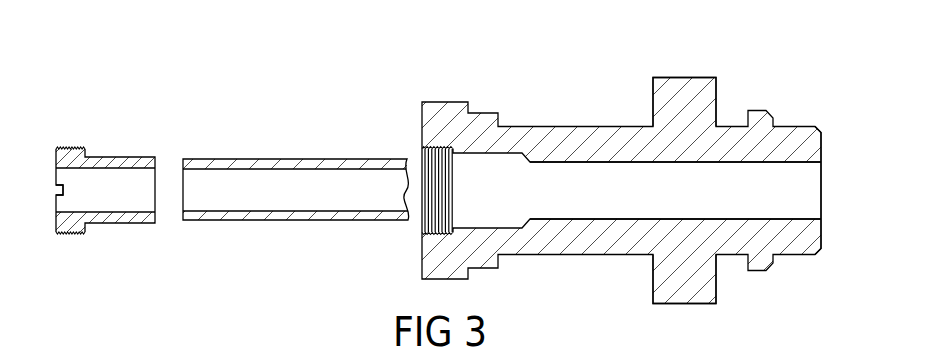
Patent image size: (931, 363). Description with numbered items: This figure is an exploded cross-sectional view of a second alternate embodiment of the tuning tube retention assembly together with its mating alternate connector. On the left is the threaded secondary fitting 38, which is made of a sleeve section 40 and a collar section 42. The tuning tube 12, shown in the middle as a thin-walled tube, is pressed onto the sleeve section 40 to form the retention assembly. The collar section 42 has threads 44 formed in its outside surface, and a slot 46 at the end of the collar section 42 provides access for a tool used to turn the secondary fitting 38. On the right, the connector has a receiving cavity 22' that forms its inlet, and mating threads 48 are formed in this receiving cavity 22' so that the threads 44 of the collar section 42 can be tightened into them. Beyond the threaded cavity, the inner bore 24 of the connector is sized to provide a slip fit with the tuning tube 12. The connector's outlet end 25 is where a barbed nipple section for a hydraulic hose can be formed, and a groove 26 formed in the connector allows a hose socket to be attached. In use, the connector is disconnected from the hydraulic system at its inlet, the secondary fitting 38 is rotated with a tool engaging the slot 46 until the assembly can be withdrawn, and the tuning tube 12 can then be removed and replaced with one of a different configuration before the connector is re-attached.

The tuning tube 12 is at (278, 163).
The receiving cavity 22' is at (405, 253).
The inner bore 24 is at (808, 188).
The outlet end 25 is at (822, 142).
The groove 26 is at (737, 107).
The threaded secondary fitting 38 is at (106, 188).
The sleeve section 40 is at (130, 218).
The collar section 42 is at (68, 230).
The threads 44 is at (80, 147).
The slot 46 is at (54, 188).
The mating threads 48 is at (421, 155).